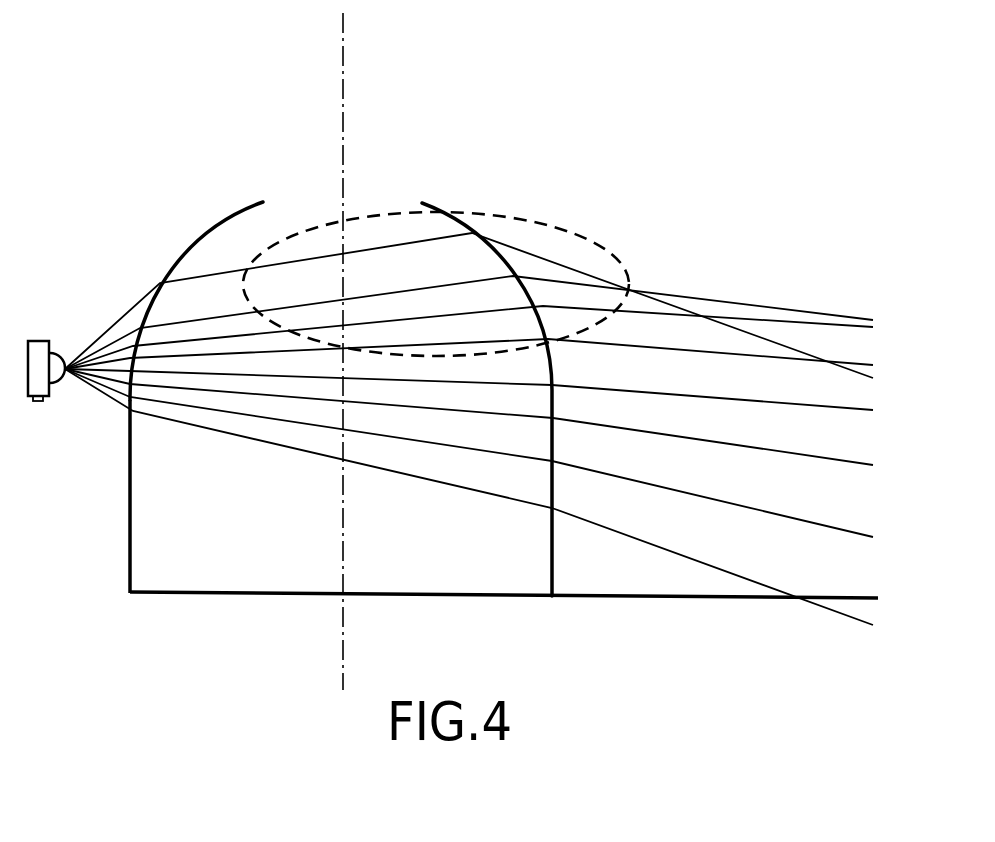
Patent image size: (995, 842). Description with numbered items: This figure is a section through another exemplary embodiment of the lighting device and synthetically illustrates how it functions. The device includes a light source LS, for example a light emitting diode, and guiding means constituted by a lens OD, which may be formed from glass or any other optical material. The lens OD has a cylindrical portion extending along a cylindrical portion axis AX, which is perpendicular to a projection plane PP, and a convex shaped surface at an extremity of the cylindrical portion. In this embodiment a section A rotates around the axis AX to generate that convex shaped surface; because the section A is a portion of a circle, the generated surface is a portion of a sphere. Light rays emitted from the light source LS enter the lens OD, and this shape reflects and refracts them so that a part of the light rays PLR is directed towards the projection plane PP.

The cylindrical portion axis AX is at (368, 351).
The section A is at (207, 231).
The part of the light rays PLR is at (565, 243).
The light source LS is at (42, 357).
The lens OD is at (143, 545).
The projection plane PP is at (673, 599).